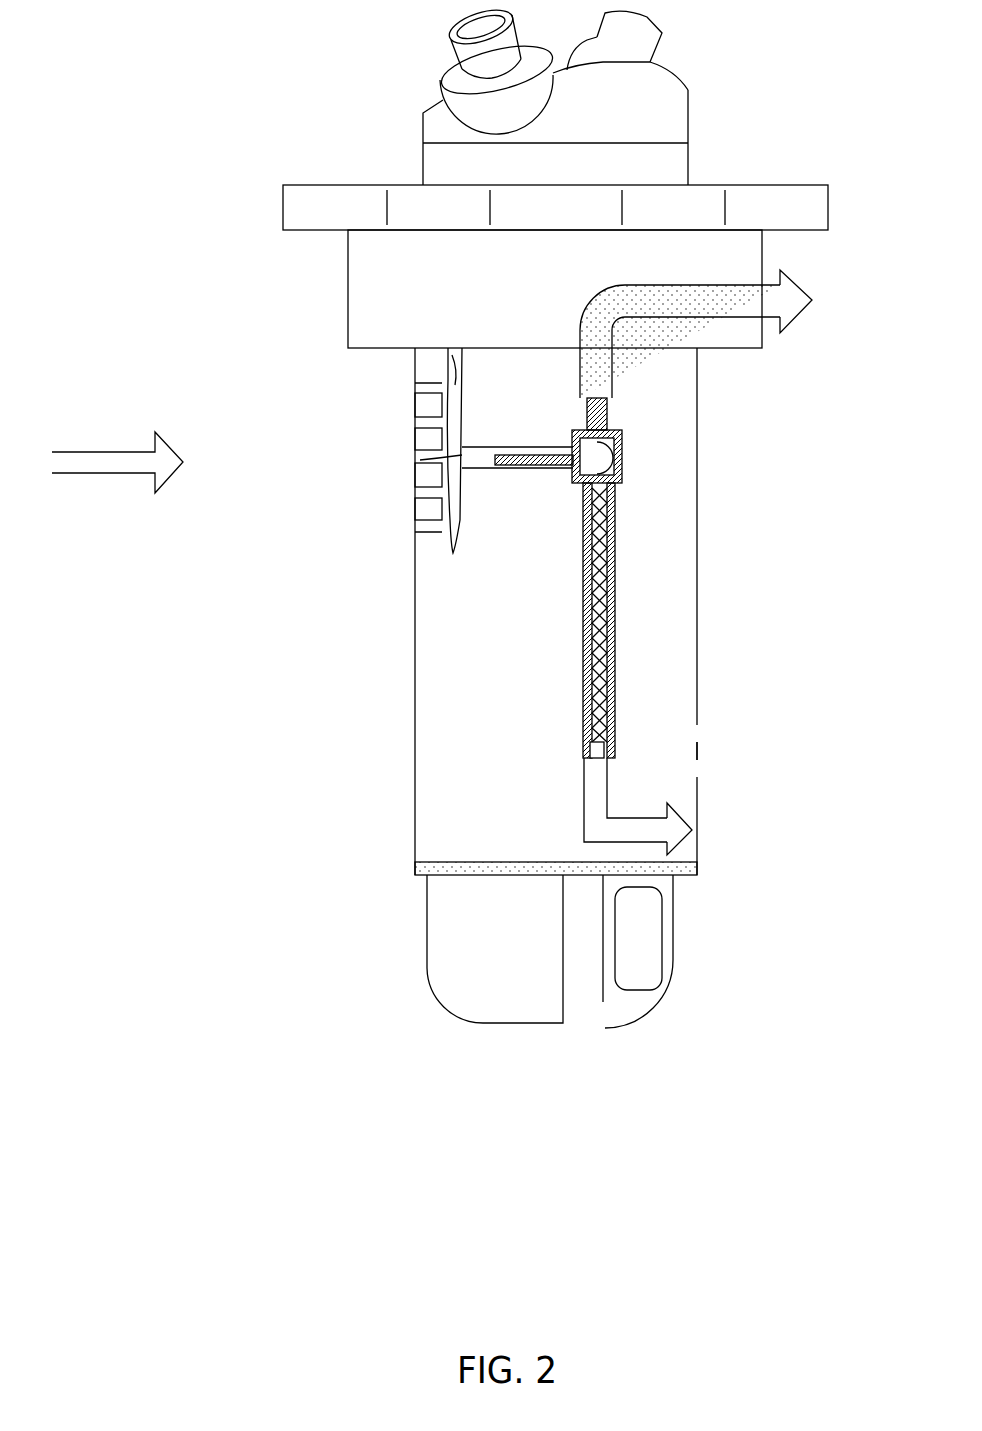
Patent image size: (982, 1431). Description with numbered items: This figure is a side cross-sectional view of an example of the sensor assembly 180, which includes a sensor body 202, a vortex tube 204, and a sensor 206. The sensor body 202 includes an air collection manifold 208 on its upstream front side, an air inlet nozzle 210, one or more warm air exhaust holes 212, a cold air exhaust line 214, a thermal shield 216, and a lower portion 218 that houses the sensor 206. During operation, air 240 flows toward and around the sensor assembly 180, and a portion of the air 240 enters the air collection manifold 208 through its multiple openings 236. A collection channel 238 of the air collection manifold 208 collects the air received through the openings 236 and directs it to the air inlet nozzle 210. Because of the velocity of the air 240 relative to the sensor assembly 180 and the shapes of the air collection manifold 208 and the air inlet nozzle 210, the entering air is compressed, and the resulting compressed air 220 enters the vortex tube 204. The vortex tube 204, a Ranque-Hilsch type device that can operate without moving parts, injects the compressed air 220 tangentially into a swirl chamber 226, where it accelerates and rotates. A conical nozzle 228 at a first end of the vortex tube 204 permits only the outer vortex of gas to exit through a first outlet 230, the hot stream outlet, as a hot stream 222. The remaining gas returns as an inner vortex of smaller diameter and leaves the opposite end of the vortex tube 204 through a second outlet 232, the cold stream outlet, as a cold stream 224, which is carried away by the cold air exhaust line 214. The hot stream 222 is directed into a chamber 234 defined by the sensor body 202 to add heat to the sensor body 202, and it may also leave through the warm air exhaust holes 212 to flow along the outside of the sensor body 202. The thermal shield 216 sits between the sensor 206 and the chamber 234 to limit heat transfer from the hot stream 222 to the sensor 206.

The sensor assembly 180 is at (753, 1047).
The sensor body 202 is at (415, 638).
The vortex tube 204 is at (566, 408).
The sensor 206 is at (650, 942).
The air collection manifold 208 is at (443, 373).
The air inlet nozzle 210 is at (468, 454).
The warm air exhaust holes 212 is at (697, 770).
The cold air exhaust line 214 is at (805, 298).
The thermal shield 216 is at (565, 870).
The lower portion 218 is at (415, 925).
The compressed air 220 is at (523, 475).
The hot stream 222 is at (598, 778).
The cold stream 224 is at (607, 412).
The swirl chamber 226 is at (623, 457).
The conical nozzle 228 is at (583, 725).
The first outlet 230 is at (613, 743).
The second outlet 232 is at (610, 400).
The chamber 234 is at (680, 805).
The openings 236 is at (416, 445).
The collection channel 238 is at (457, 360).
The air 240 is at (102, 462).